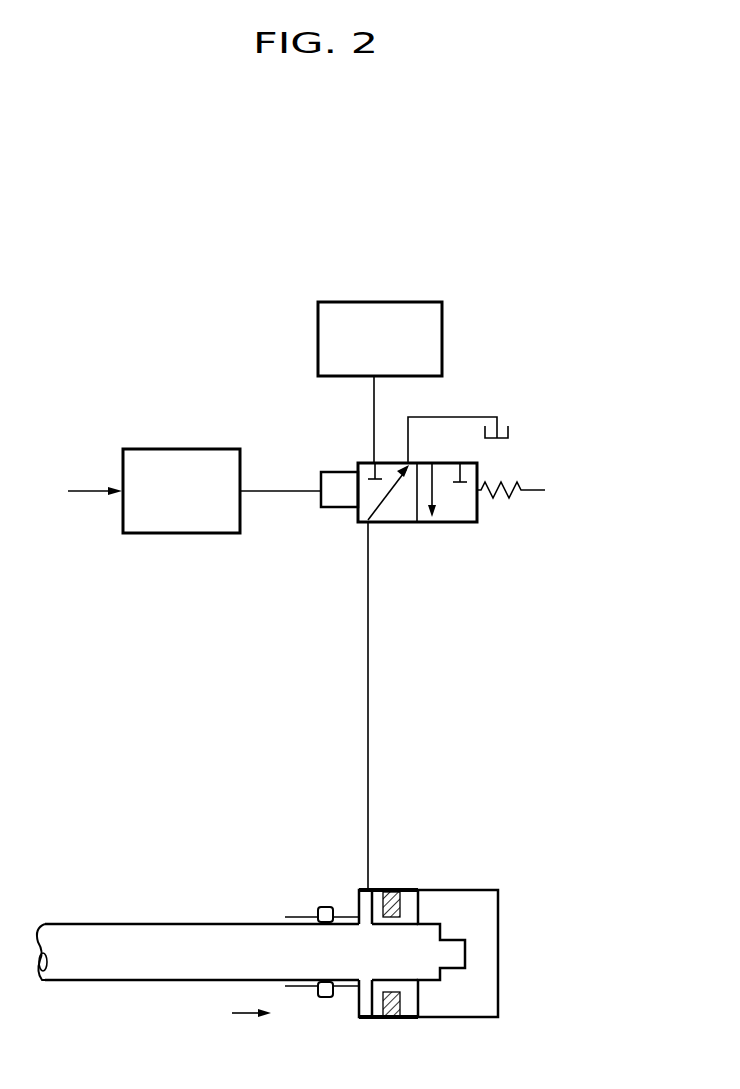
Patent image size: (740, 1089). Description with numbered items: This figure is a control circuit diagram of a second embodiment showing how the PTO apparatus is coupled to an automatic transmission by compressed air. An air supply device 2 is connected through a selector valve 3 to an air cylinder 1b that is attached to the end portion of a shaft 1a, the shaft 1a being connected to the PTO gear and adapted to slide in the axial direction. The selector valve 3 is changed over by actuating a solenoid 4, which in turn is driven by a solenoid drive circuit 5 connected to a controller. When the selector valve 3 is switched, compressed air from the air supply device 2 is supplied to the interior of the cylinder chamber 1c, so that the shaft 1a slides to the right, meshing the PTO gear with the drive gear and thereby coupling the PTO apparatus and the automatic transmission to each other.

The air supply device 2 is at (357, 297).
The solenoid drive circuit 5 is at (184, 446).
The solenoid 4 is at (335, 468).
The selector valve 3 is at (455, 528).
The shaft 1a is at (176, 970).
The air cylinder 1b is at (455, 886).
The cylinder chamber 1c is at (362, 1020).